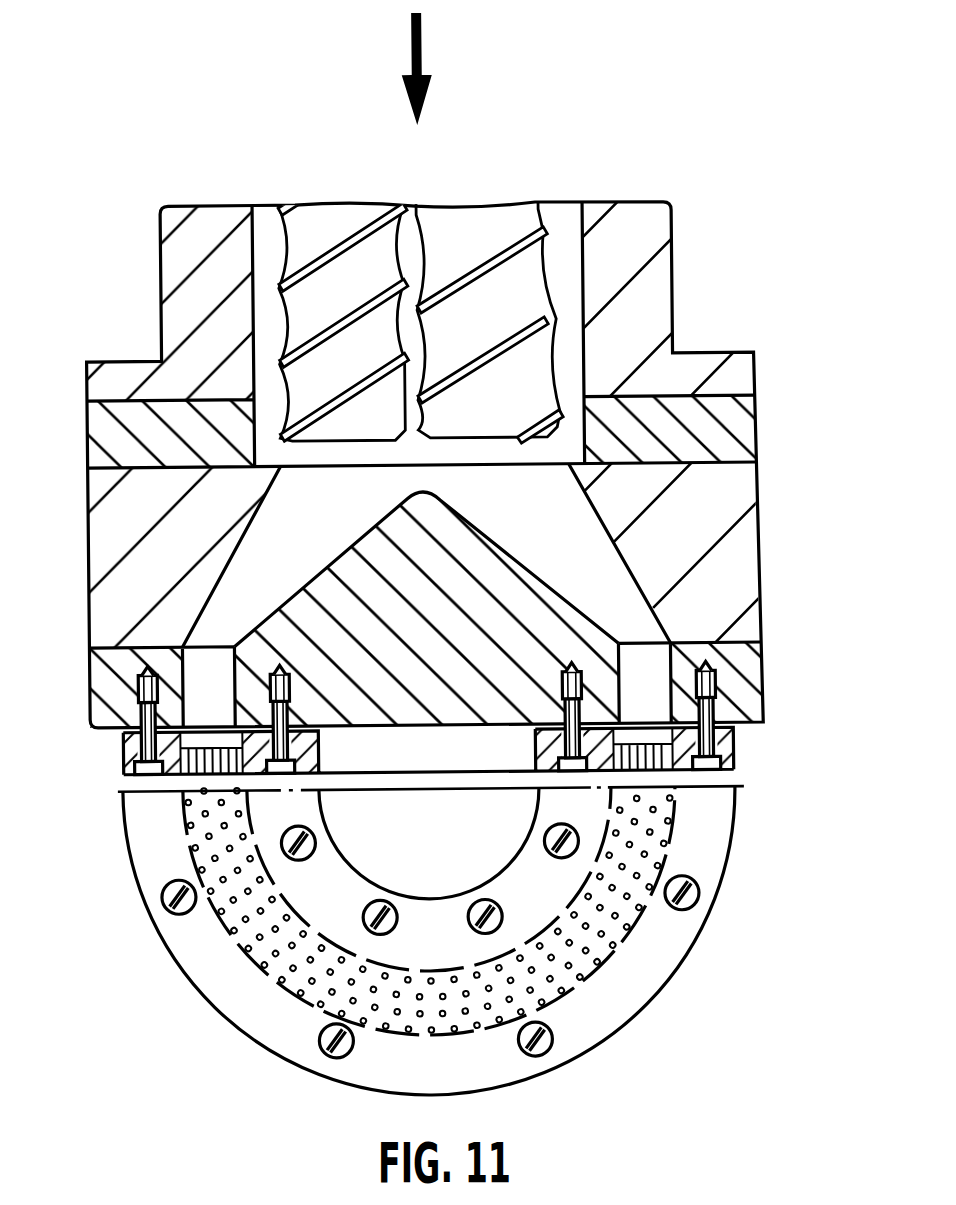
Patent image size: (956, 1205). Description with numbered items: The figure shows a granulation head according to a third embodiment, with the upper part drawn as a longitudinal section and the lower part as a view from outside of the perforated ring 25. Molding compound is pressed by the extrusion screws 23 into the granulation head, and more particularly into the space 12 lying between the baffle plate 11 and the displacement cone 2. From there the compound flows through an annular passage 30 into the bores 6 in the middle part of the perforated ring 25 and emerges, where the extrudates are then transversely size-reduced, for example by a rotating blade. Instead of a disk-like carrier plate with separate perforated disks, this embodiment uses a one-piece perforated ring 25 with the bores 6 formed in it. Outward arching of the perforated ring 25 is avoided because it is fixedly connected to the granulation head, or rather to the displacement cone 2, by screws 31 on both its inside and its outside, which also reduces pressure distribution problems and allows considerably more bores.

The extrusion screws 23 is at (338, 231).
The space 12 is at (507, 496).
The baffle plate 11 is at (687, 492).
The displacement cone 2 is at (506, 581).
The annular passage 30 is at (640, 664).
The perforated ring 25 is at (740, 745).
The bores 6 is at (128, 749).
The screws 31 is at (275, 772).